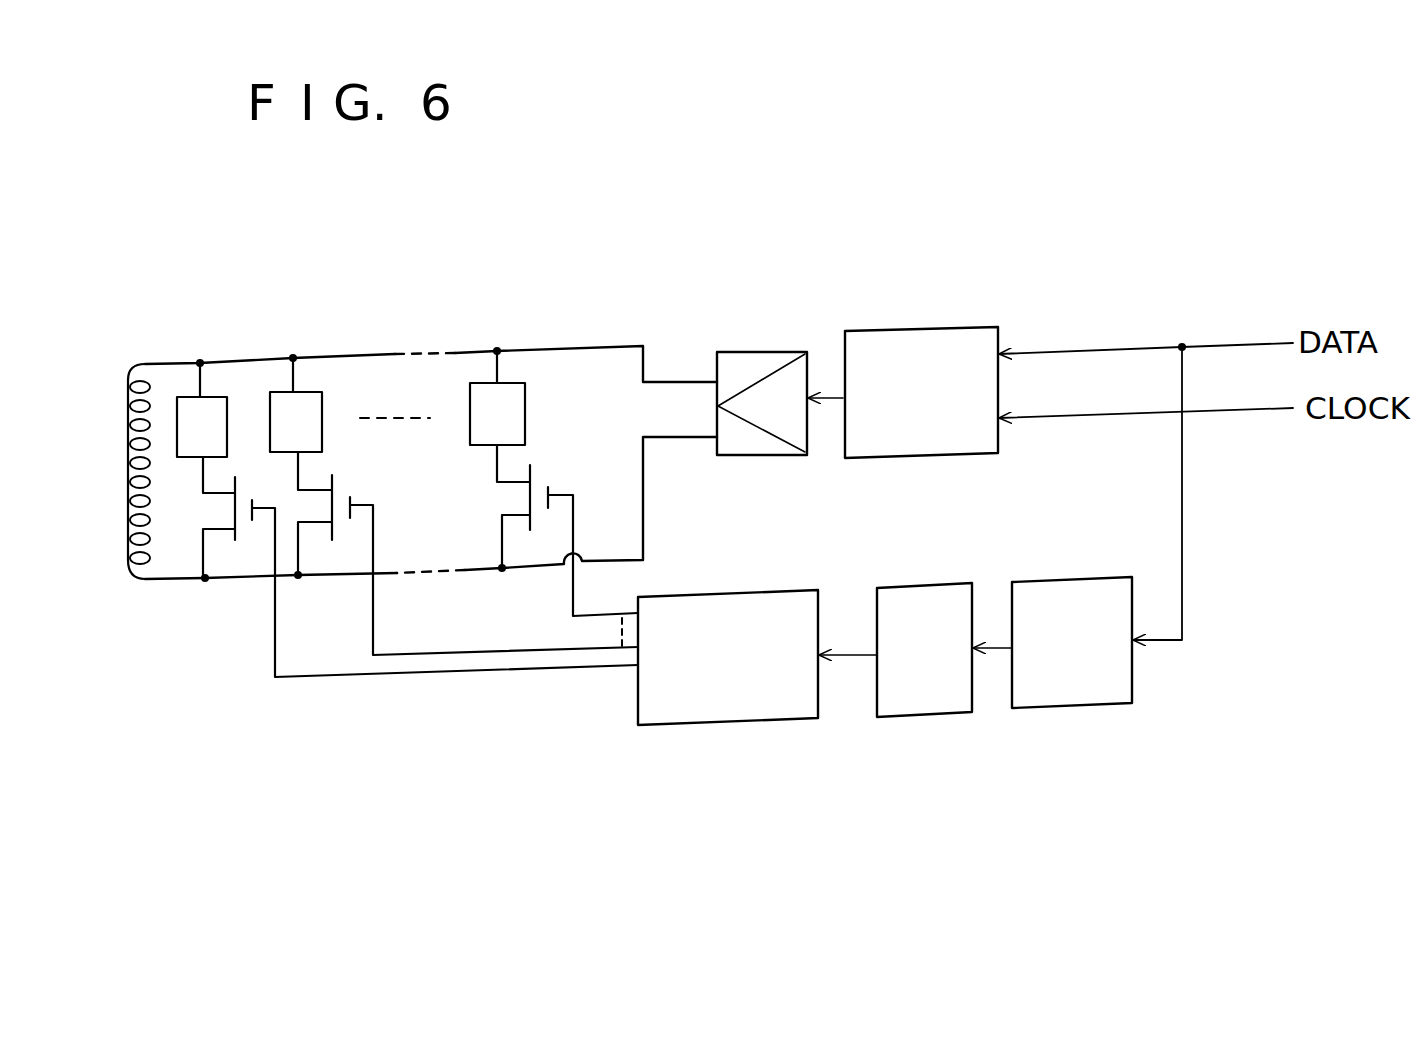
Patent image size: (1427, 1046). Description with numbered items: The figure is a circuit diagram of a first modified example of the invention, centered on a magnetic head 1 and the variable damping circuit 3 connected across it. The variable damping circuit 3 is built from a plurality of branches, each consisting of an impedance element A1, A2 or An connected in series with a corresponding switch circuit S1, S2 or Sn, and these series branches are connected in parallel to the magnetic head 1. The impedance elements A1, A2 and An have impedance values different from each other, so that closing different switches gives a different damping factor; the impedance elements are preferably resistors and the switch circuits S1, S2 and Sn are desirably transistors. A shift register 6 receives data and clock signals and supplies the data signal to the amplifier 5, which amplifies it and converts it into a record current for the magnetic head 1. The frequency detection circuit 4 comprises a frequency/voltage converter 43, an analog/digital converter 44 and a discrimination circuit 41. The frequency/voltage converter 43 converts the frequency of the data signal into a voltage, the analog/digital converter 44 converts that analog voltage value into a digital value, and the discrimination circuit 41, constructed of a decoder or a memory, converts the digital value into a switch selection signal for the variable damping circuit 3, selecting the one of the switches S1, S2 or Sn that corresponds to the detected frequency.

The magnetic head 1 is at (142, 350).
The variable damping circuit 3 is at (483, 327).
The amplifier 5 is at (764, 351).
The shift register 6 is at (950, 330).
The frequency detection circuit 4 is at (877, 731).
The discrimination circuit 41 is at (742, 719).
The analog/digital converter 44 is at (931, 712).
The frequency/voltage converter 43 is at (1072, 684).
The impedance element A1 is at (226, 408).
The impedance element A2 is at (326, 398).
The impedance element An is at (525, 395).
The switch circuit S1 is at (420, 567).
The switch circuit S2 is at (468, 553).
The switch circuit Sn is at (567, 530).